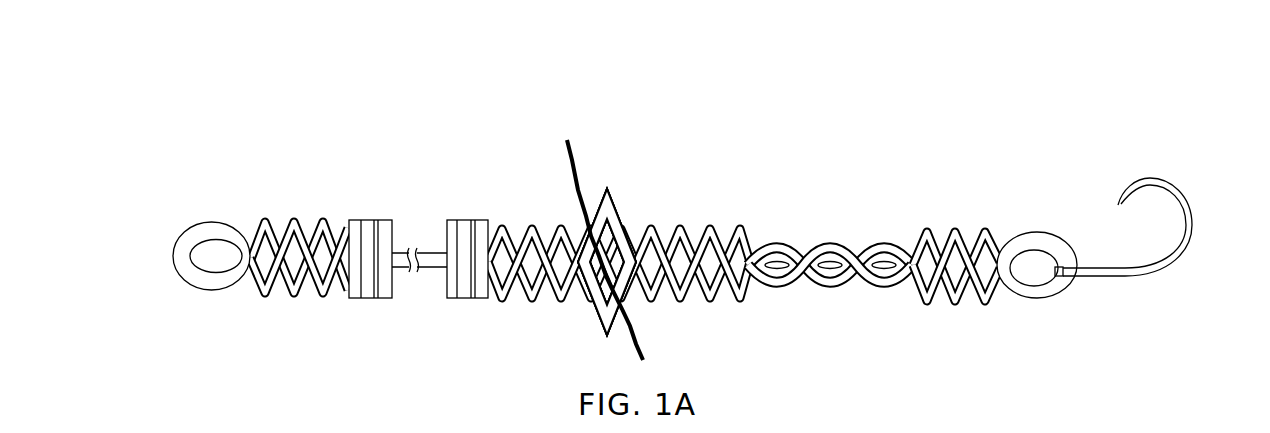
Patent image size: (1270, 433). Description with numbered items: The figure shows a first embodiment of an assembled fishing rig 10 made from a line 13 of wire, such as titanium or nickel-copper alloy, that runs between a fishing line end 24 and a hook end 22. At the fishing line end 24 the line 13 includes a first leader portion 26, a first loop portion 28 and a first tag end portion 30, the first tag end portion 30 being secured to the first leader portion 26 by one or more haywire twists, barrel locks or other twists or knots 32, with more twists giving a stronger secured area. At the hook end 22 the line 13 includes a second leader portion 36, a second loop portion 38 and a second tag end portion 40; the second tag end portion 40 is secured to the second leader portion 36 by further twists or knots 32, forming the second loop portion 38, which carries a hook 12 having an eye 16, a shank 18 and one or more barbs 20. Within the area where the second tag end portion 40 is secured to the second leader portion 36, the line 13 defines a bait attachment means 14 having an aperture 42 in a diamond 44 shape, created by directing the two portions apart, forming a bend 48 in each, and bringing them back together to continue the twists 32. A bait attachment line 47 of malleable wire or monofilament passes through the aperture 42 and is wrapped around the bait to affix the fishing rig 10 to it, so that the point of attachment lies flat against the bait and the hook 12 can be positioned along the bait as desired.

The fishing rig 10 is at (243, 132).
The hook 12 is at (1173, 183).
The line 13 is at (900, 242).
The bait attachment means 14 is at (608, 238).
The eye 16 is at (1067, 240).
The shank 18 is at (1123, 284).
The barb 20 is at (1118, 198).
The hook end 22 is at (1025, 232).
The fishing line end 24 is at (226, 221).
The first leader portion 26 is at (264, 297).
The first loop portion 28 is at (206, 290).
The first tag end portion 30 is at (268, 218).
The haywire twists, barrel locks, or other twists or knots 32 is at (331, 228).
The second leader portion 36 is at (982, 305).
The second loop portion 38 is at (1047, 298).
The second tag end portion 40 is at (985, 236).
The aperture 42 is at (598, 273).
The diamond 44 is at (612, 248).
The bait attachment line 47 is at (562, 148).
The bend 48 is at (604, 188).